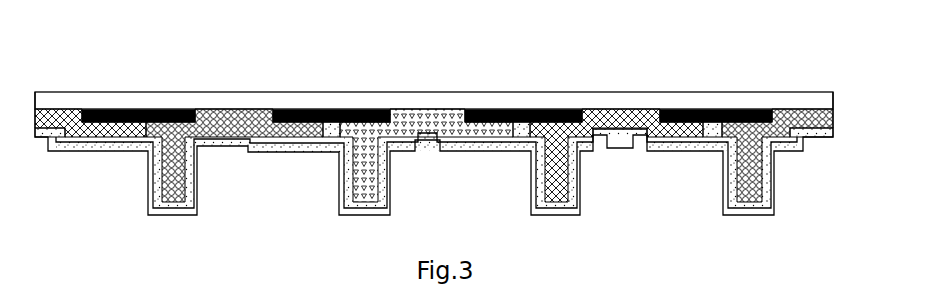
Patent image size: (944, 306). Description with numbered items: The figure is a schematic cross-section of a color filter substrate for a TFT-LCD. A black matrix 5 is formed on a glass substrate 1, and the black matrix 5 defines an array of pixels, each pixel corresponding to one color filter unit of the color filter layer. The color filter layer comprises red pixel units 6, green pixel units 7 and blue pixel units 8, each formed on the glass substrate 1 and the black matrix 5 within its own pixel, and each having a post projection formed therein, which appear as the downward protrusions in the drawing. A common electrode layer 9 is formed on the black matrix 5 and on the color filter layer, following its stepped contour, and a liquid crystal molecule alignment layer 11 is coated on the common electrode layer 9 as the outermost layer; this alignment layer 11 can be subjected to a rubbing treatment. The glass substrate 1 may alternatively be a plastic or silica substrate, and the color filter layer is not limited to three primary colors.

The glass substrate 1 is at (345, 98).
The black matrix 5 is at (148, 118).
The red pixel units 6 is at (247, 118).
The green pixel units 7 is at (425, 125).
The blue pixel units 8 is at (58, 120).
The common electrode layer 9 is at (425, 130).
The liquid crystal molecule alignment layer 11 is at (237, 137).